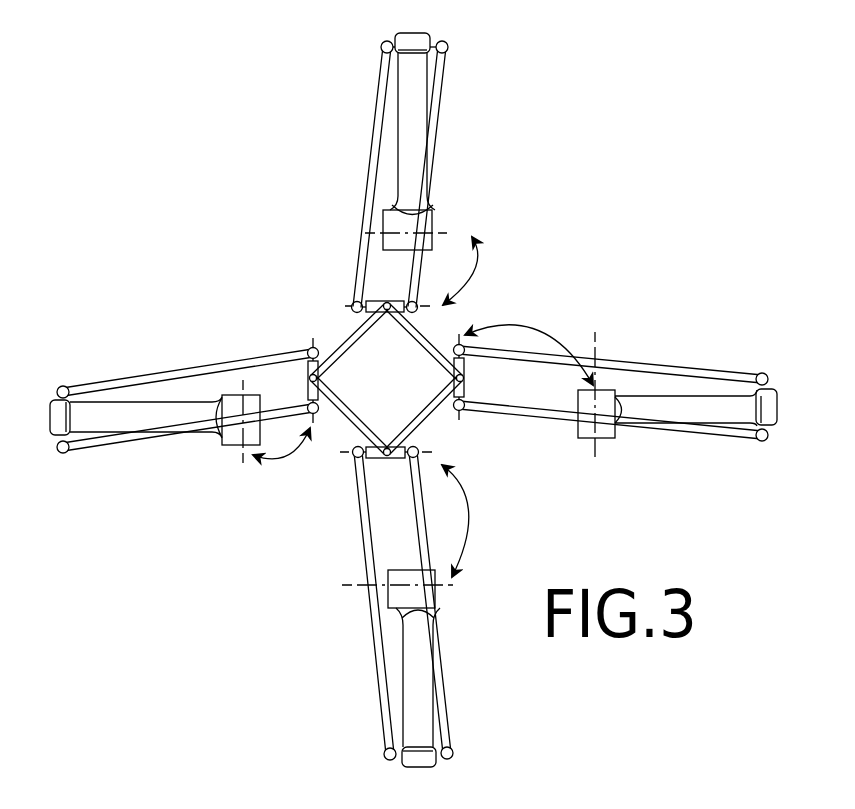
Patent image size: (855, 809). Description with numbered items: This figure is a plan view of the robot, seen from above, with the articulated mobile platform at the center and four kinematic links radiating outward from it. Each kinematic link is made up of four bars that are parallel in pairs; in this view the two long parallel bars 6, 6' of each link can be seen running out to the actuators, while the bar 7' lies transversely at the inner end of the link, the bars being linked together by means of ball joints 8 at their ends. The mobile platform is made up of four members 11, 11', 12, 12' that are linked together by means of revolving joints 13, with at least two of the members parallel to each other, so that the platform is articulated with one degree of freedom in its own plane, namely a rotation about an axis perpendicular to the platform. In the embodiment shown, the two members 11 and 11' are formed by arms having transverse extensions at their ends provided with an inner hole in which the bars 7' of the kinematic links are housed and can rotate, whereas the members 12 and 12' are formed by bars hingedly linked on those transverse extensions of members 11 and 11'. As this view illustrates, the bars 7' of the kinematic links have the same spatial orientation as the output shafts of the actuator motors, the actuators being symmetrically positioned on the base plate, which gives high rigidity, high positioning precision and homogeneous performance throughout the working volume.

The bar 6 is at (334, 177).
The bar 6' is at (477, 177).
The bar 7' is at (346, 37).
The ball joint 8 is at (448, 47).
The member 11 is at (476, 448).
The member 11' is at (310, 298).
The member 12 is at (489, 292).
The member 12' is at (307, 459).
The revolving joint 13 is at (311, 375).